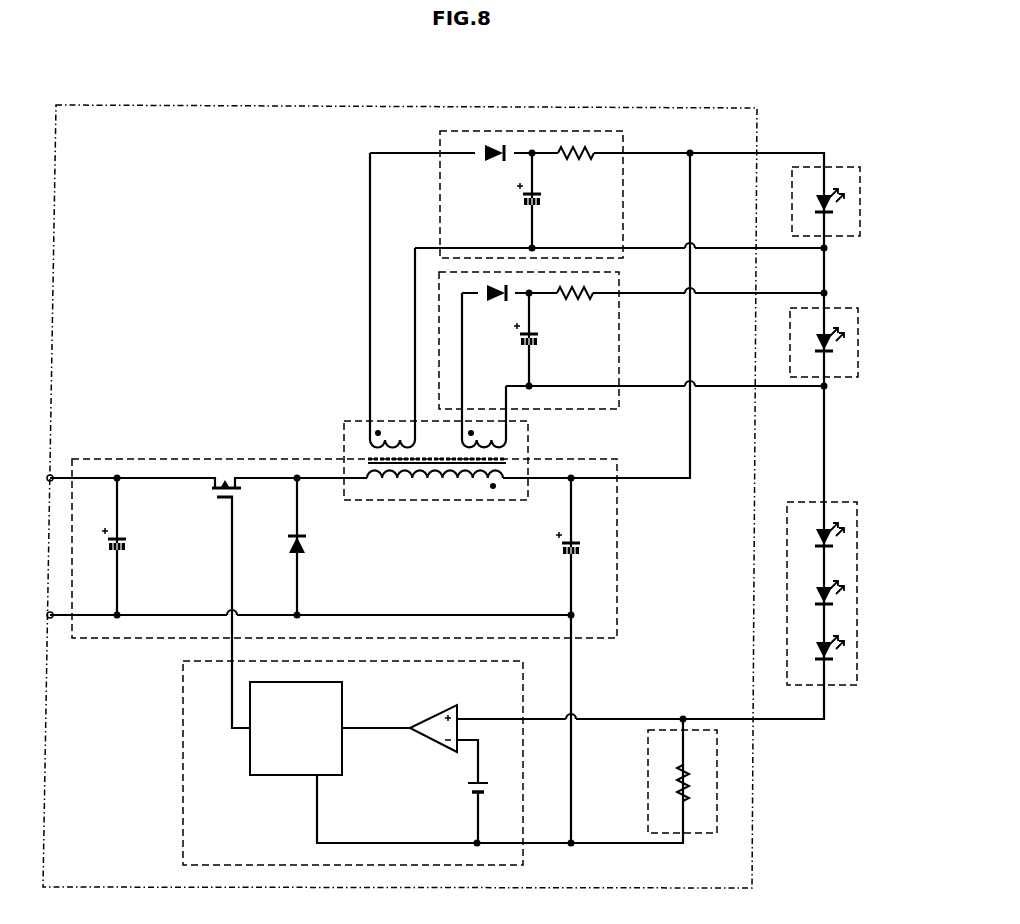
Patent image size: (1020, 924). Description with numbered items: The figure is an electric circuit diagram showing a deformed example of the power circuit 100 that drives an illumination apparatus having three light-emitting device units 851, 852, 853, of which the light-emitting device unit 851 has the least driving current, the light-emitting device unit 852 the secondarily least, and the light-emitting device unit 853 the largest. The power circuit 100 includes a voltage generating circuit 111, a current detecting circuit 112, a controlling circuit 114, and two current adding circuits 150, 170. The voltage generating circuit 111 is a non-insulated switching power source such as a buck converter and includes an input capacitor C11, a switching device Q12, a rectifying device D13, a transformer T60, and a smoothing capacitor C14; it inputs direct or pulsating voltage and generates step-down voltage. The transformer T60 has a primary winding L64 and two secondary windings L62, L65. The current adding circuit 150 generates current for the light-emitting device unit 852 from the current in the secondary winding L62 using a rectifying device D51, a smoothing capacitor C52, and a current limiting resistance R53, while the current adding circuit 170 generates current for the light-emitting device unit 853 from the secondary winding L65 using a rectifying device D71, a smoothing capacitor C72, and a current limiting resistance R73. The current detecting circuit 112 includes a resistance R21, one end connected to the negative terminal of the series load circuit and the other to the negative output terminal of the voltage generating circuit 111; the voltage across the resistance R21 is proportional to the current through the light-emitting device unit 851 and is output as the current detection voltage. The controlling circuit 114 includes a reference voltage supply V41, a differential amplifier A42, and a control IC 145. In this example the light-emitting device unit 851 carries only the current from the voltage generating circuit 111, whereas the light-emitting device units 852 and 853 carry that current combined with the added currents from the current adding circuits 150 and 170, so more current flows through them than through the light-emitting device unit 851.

The power circuit 100 is at (763, 101).
The voltage generating circuit 111 is at (618, 467).
The current detecting circuit 112 is at (718, 834).
The controlling circuit 114 is at (183, 661).
The control IC 145 is at (342, 684).
The current adding circuit 150 is at (616, 136).
The current adding circuit 170 is at (642, 321).
The light-emitting device unit 851 is at (857, 686).
The light-emitting device unit 852 is at (860, 171).
The light-emitting device unit 853 is at (858, 378).
The input capacitor C11 is at (138, 526).
The smoothing capacitor C14 is at (562, 566).
The smoothing capacitor C52 is at (542, 216).
The smoothing capacitor C72 is at (535, 356).
The rectifying device D13 is at (306, 544).
The rectifying device D51 is at (489, 173).
The rectifying device D71 is at (492, 311).
The current limiting resistance R53 is at (579, 167).
The current limiting resistance R73 is at (579, 305).
The resistance R21 is at (666, 772).
The secondary winding L62 is at (365, 435).
The primary winding L64 is at (437, 492).
The secondary winding L65 is at (508, 438).
The transformer T60 is at (528, 498).
The switching device Q12 is at (228, 472).
The differential amplifier A42 is at (436, 713).
The reference voltage supply V41 is at (474, 802).